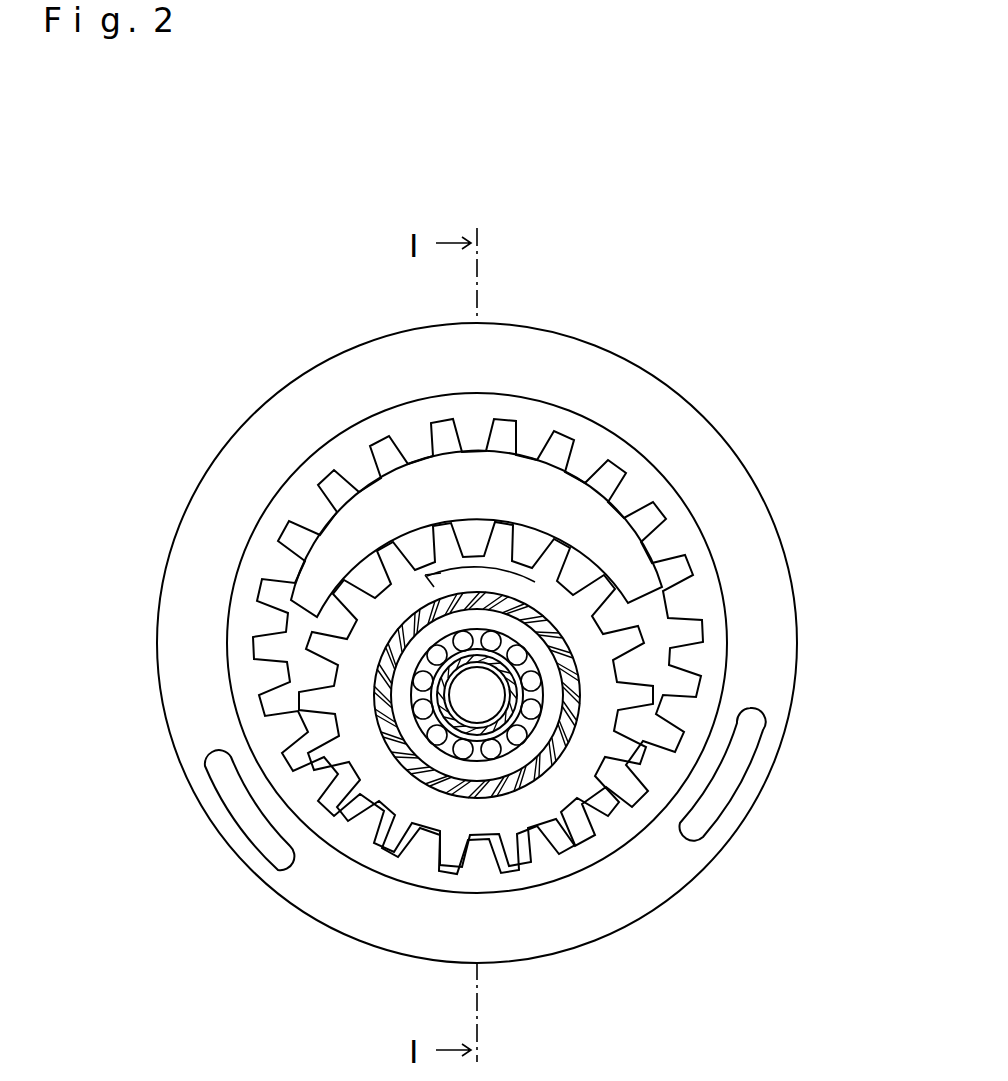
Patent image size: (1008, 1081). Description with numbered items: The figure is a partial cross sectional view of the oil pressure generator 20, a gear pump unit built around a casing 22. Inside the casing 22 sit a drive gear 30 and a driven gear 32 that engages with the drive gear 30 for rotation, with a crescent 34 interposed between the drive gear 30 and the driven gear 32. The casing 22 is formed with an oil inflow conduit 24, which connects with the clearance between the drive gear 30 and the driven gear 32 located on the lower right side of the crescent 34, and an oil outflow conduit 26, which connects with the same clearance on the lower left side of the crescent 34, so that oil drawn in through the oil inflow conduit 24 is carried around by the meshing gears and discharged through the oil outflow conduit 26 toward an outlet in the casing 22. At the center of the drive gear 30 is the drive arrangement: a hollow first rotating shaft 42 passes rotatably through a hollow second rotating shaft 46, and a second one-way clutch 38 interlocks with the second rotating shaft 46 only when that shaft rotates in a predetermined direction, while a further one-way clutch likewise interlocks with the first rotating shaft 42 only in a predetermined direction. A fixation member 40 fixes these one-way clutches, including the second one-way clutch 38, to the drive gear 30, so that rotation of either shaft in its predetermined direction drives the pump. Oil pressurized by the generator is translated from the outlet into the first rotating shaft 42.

The oil pressure generator 20 is at (836, 391).
The casing 22 is at (737, 482).
The oil inflow conduit 24 is at (733, 775).
The oil outflow conduit 26 is at (247, 827).
The drive gear 30 is at (662, 633).
The driven gear 32 is at (705, 580).
The crescent 34 is at (592, 498).
The second one-way clutch 38 is at (527, 750).
The fixation member 40 is at (560, 740).
The first rotating shaft 42 is at (460, 738).
The second rotating shaft 46 is at (508, 757).